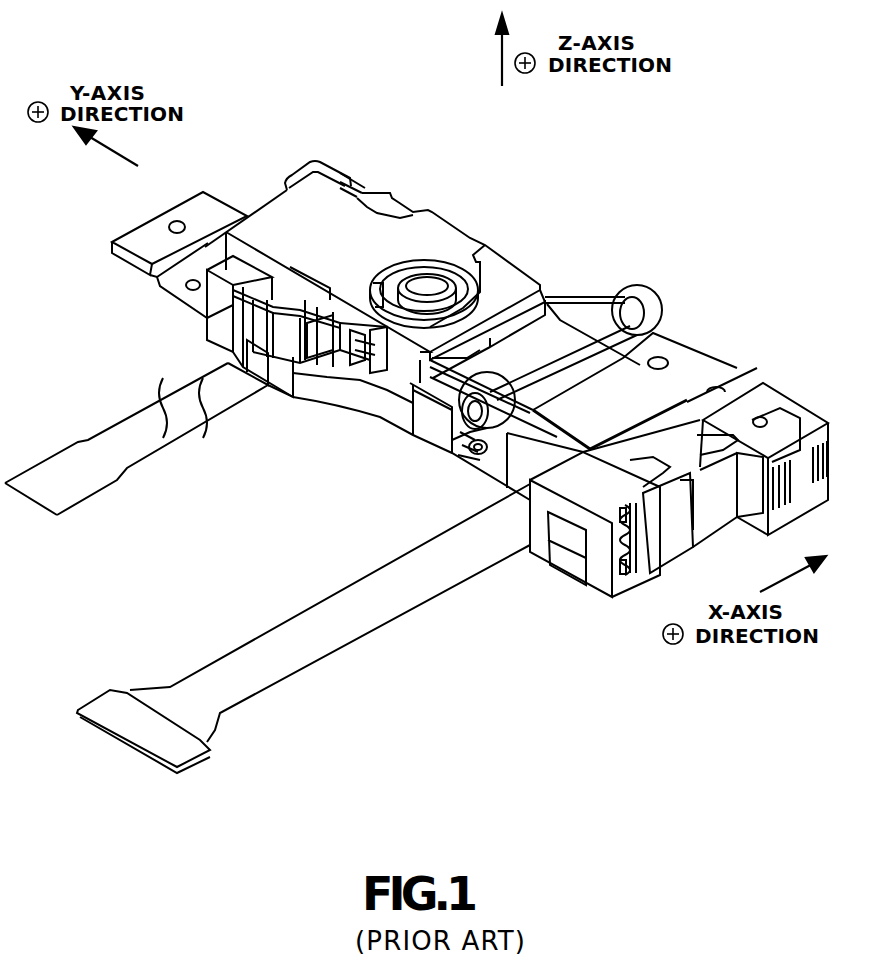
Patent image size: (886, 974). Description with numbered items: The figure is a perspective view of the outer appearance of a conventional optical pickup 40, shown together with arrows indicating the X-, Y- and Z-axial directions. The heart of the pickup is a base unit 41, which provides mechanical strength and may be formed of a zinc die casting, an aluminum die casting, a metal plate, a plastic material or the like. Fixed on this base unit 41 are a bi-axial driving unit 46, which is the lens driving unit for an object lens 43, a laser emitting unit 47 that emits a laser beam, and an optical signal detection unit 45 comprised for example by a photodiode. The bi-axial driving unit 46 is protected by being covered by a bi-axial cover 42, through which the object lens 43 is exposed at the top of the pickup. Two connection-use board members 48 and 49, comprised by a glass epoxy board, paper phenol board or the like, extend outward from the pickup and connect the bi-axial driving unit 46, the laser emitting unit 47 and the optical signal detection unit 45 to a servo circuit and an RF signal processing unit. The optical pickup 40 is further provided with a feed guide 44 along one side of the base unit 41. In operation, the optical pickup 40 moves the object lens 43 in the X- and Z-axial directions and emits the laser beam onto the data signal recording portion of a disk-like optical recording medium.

The optical pickup 40 is at (272, 130).
The base unit 41 is at (378, 405).
The bi-axial cover 42 is at (322, 215).
The object lens 43 is at (430, 283).
The feed guide 44 is at (632, 296).
The optical signal detection unit 45 is at (797, 472).
The bi-axial driving unit 46 is at (367, 372).
The laser emitting unit 47 is at (443, 446).
The connection-use board member 48 is at (93, 498).
The connection-use board member 49 is at (350, 640).